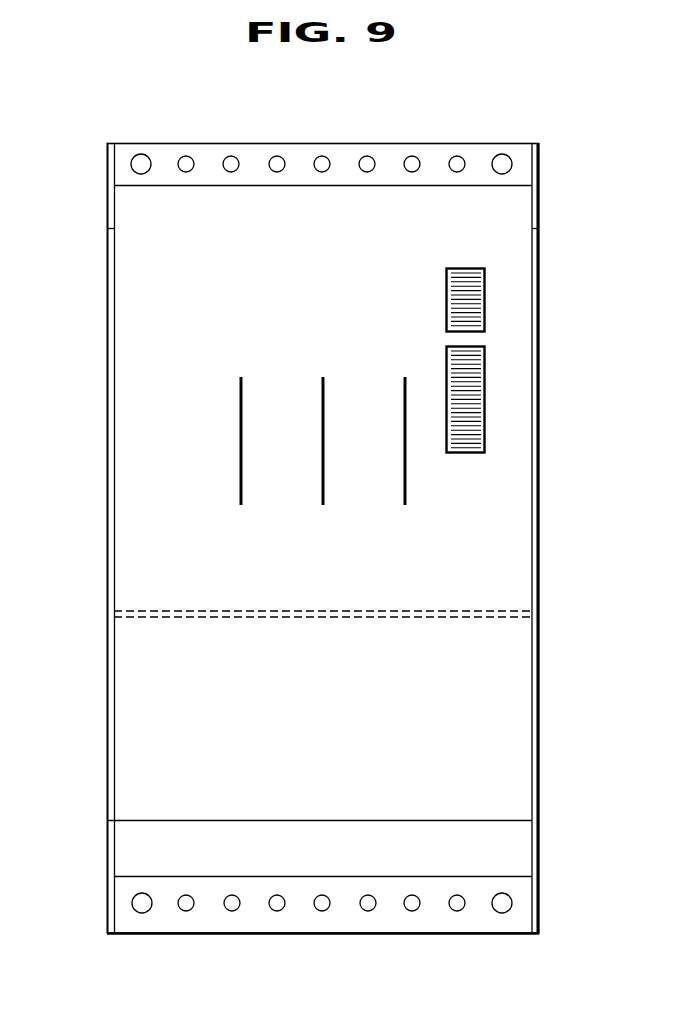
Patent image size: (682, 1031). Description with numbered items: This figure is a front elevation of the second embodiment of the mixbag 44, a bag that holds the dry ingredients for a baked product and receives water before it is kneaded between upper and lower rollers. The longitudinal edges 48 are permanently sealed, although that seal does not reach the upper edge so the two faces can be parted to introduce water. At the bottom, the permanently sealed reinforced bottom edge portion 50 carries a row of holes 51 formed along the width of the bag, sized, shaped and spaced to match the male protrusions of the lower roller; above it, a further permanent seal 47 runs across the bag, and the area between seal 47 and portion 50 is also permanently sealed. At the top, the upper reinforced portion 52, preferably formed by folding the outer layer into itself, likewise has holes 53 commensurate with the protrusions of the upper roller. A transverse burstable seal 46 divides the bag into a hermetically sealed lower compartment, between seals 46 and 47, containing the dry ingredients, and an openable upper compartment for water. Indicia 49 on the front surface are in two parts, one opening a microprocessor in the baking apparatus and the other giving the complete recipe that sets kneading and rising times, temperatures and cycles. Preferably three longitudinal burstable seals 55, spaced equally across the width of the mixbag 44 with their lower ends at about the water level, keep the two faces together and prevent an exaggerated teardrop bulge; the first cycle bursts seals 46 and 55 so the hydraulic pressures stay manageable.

The mixbag 44 is at (503, 541).
The burstable seal 46 is at (498, 611).
The permanent seal 47 is at (324, 818).
The longitudinal edges 48 is at (540, 468).
The indicia 49 is at (446, 318).
The reinforced bottom edge portion 50 is at (518, 911).
The holes 51 is at (457, 912).
The upper reinforced portion 52 is at (520, 165).
The holes 53 is at (457, 155).
The burstable seals 55 is at (405, 468).